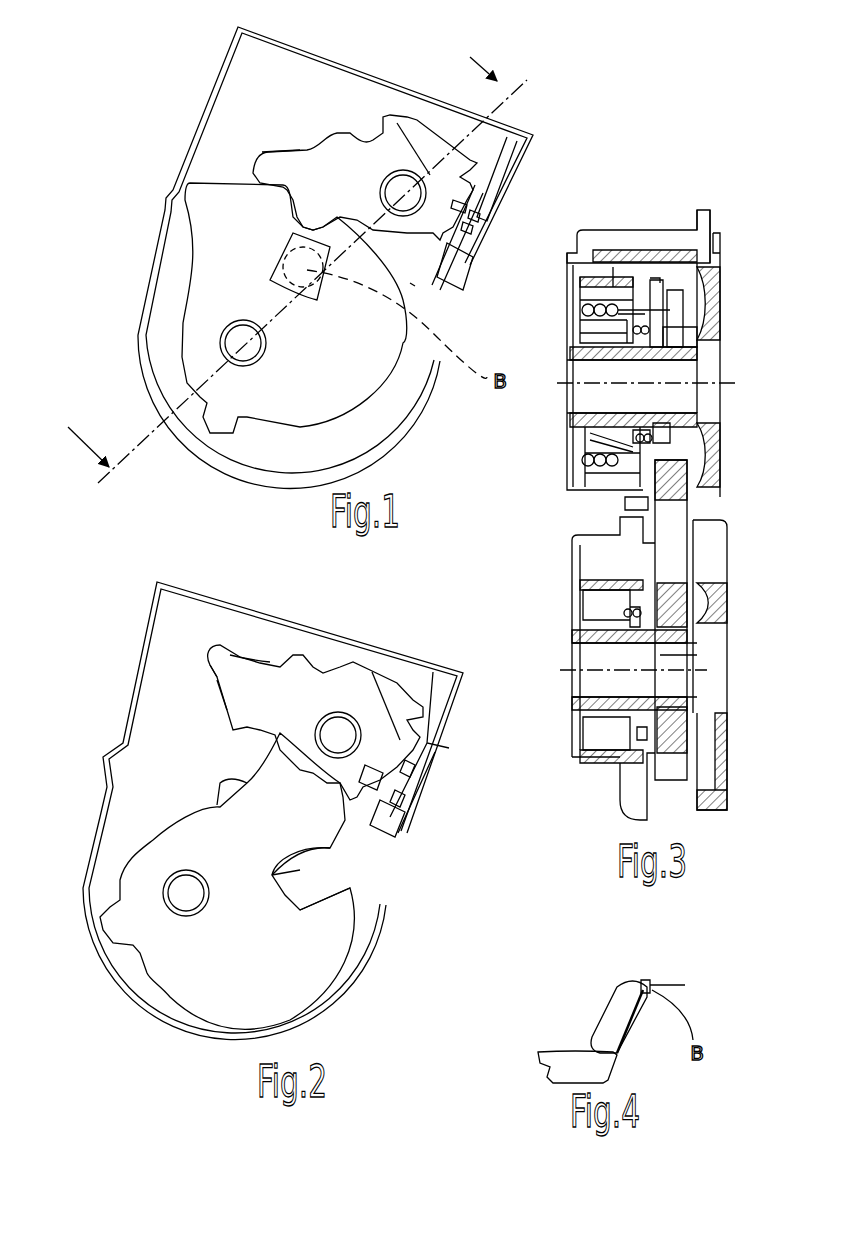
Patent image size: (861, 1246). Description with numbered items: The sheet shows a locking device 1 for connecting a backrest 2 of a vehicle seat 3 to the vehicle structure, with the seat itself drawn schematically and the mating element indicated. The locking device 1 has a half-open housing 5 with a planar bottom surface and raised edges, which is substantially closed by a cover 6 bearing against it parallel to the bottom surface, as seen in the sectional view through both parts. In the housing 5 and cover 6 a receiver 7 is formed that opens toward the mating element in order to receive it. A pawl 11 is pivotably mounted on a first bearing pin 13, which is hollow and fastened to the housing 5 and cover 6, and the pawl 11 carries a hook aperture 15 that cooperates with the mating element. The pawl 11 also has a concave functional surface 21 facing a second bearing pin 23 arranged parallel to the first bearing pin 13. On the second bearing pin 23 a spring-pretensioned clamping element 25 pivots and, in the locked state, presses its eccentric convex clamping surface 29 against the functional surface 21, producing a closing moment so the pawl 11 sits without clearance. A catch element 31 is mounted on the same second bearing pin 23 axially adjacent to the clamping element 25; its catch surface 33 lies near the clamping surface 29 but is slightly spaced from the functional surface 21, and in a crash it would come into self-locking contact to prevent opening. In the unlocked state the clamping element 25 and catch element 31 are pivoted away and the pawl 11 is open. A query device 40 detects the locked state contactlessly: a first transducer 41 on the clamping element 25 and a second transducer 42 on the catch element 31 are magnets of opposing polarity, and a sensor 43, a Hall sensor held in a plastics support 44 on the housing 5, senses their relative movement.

In FIG. 1, the locking device 1 is at (178, 98).
In FIG. 4, the locking device 1 is at (645, 978).
In FIG. 4, the backrest 2 is at (613, 1023).
In FIG. 4, the vehicle seat 3 is at (560, 1017).
In FIG. 1, the housing 5 is at (250, 90).
In FIG. 3, the housing 5 is at (593, 433).
In FIG. 2, the housing 5 is at (140, 810).
In FIG. 3, the cover 6 is at (720, 305).
In FIG. 1, the receiver 7 is at (412, 284).
In FIG. 3, the receiver 7 is at (630, 500).
In FIG. 2, the receiver 7 is at (222, 787).
In FIG. 1, the pawl 11 is at (227, 277).
In FIG. 3, the pawl 11 is at (727, 500).
In FIG. 2, the pawl 11 is at (223, 962).
In FIG. 1, the first bearing pin 13 is at (217, 338).
In FIG. 3, the first bearing pin 13 is at (693, 657).
In FIG. 2, the first bearing pin 13 is at (170, 917).
In FIG. 1, the hook aperture 15 is at (293, 297).
In FIG. 3, the hook aperture 15 is at (673, 543).
In FIG. 2, the hook aperture 15 is at (320, 910).
In FIG. 2, the functional surface 21 is at (325, 850).
In FIG. 1, the second bearing pin 23 is at (400, 170).
In FIG. 3, the second bearing pin 23 is at (650, 360).
In FIG. 2, the second bearing pin 23 is at (328, 712).
In FIG. 1, the clamping element 25 is at (283, 170).
In FIG. 3, the clamping element 25 is at (657, 283).
In FIG. 2, the clamping element 25 is at (385, 695).
In FIG. 2, the clamping surface 29 is at (210, 690).
In FIG. 1, the catch element 31 is at (290, 153).
In FIG. 3, the catch element 31 is at (673, 290).
In FIG. 2, the catch element 31 is at (250, 673).
In FIG. 2, the catch surface 33 is at (225, 708).
In FIG. 1, the query device 40 is at (460, 240).
In FIG. 2, the query device 40 is at (375, 812).
In FIG. 1, the first transducer 41 is at (480, 214).
In FIG. 2, the first transducer 41 is at (405, 797).
In FIG. 1, the second transducer 42 is at (470, 205).
In FIG. 2, the second transducer 42 is at (385, 780).
In FIG. 1, the sensor 43 is at (473, 228).
In FIG. 2, the sensor 43 is at (428, 763).
In FIG. 1, the support 44 is at (452, 265).
In FIG. 2, the support 44 is at (420, 747).